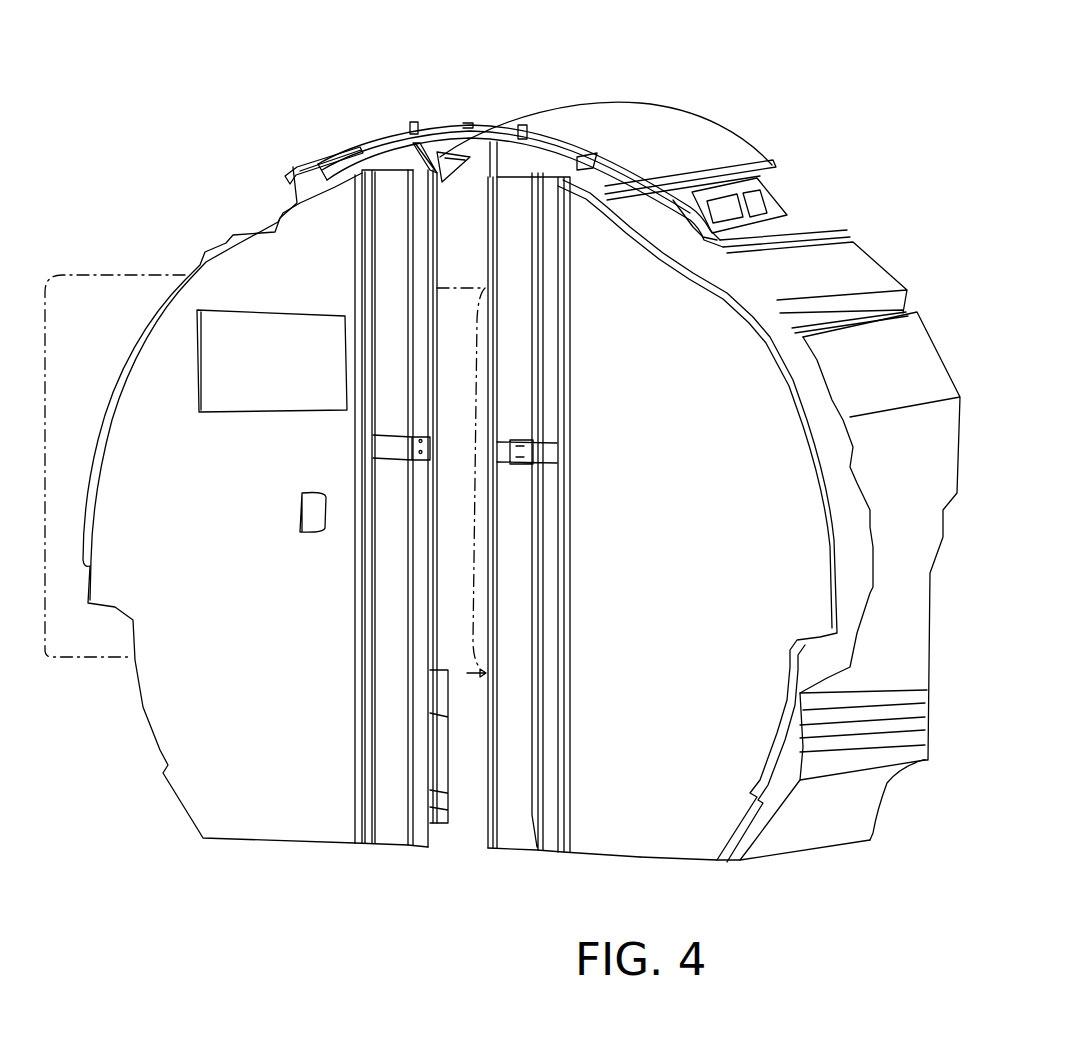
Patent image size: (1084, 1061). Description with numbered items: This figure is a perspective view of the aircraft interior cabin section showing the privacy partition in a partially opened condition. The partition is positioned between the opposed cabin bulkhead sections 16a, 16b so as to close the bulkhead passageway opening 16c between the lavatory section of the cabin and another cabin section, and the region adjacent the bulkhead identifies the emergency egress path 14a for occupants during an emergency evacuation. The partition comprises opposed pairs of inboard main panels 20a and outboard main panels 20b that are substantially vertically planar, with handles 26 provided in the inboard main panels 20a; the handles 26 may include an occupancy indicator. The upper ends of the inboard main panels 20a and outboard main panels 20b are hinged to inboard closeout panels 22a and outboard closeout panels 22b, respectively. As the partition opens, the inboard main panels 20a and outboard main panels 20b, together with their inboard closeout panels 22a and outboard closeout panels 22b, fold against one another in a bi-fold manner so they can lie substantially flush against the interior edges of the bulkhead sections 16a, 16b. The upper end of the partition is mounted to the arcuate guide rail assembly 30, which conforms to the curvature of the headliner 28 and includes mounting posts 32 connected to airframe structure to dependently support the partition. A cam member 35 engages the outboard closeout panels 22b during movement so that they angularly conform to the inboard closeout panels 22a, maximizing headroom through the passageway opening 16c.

The emergency egress path 14a is at (122, 294).
The cabin bulkhead section 16a is at (202, 559).
The cabin bulkhead section 16b is at (737, 571).
The bulkhead passageway opening 16c is at (458, 828).
The inboard main panel 20a is at (425, 362).
The outboard main panel 20b is at (393, 260).
The inboard closeout panel 22a is at (517, 170).
The outboard closeout panel 22b is at (390, 160).
The handle 26 is at (423, 445).
The headliner 28 is at (703, 143).
The arcuate guide rail assembly 30 is at (407, 157).
The mounting post 32 is at (523, 123).
The cam member 35 is at (333, 163).